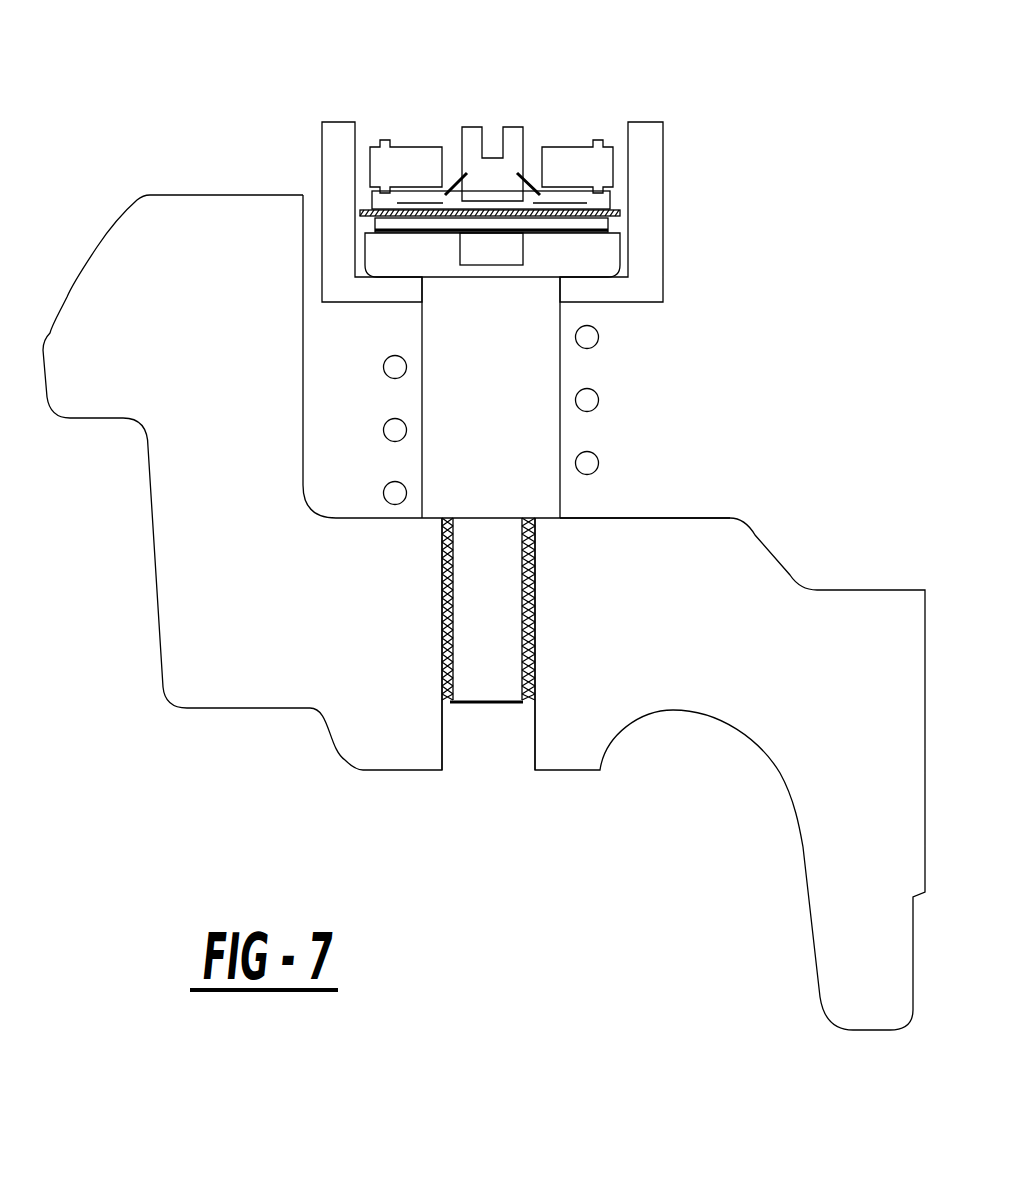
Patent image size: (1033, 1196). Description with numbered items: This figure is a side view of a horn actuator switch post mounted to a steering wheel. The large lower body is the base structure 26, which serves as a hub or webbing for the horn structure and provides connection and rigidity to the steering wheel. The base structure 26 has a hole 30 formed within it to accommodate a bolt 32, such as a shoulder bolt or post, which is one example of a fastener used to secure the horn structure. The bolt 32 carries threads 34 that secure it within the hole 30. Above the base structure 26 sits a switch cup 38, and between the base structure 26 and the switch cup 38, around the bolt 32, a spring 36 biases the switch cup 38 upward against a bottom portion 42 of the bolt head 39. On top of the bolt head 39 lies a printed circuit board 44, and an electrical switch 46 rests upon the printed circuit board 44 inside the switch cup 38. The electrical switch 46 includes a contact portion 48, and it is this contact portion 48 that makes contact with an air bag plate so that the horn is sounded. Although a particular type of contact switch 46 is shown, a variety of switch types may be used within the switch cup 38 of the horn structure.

The base structure 26 is at (790, 563).
The hole 30 is at (530, 707).
The bolt 32 is at (560, 488).
The threads 34 is at (450, 700).
The spring 36 is at (596, 456).
The switch cup 38 is at (662, 208).
The bolt head 39 is at (618, 257).
The bottom portion 42 is at (597, 283).
The printed circuit board 44 is at (620, 213).
The electrical switch 46 is at (565, 146).
The contact portion 48 is at (472, 126).